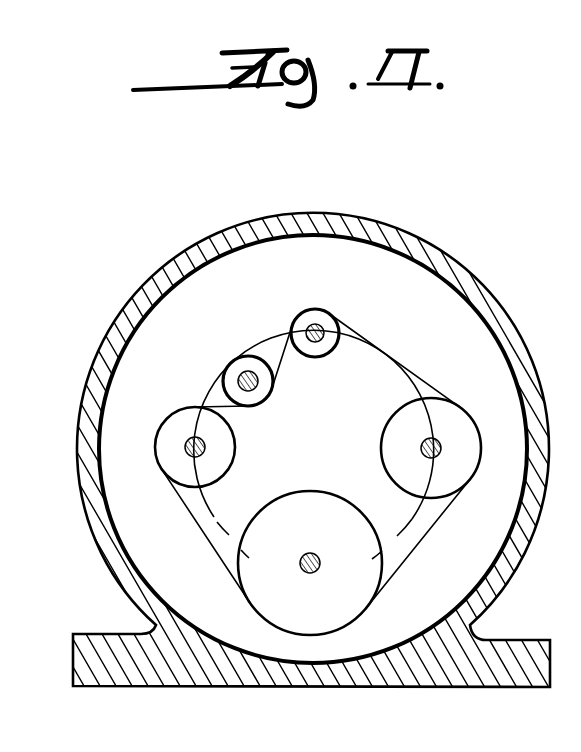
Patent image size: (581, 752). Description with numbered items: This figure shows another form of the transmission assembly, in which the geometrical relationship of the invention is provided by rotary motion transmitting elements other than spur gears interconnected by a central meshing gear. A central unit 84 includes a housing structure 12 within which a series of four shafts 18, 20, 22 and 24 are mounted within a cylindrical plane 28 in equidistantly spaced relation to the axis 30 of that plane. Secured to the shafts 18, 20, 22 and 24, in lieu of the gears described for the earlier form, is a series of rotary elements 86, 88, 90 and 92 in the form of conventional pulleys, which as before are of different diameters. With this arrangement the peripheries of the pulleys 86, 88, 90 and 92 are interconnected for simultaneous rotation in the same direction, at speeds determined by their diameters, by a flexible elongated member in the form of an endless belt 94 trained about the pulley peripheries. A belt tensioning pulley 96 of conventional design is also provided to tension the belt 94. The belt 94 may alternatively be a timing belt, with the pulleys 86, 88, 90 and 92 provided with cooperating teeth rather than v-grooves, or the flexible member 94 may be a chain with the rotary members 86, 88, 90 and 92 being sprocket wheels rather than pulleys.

The housing structure 12 is at (169, 264).
The central unit 84 is at (425, 238).
The rotary element (pulley) 86 is at (306, 311).
The shaft 18 is at (322, 328).
The cylindrical plane 28 is at (358, 336).
The belt tensioning pulley 96 is at (236, 363).
The endless belt 94 is at (281, 373).
The rotary element (pulley) 92 is at (190, 409).
The rotary element (pulley) 88 is at (447, 413).
The shaft 20 is at (422, 455).
The shaft 24 is at (188, 457).
The axis 30 is at (305, 452).
The shaft 22 is at (242, 544).
The rotary element (pulley) 90 is at (262, 600).